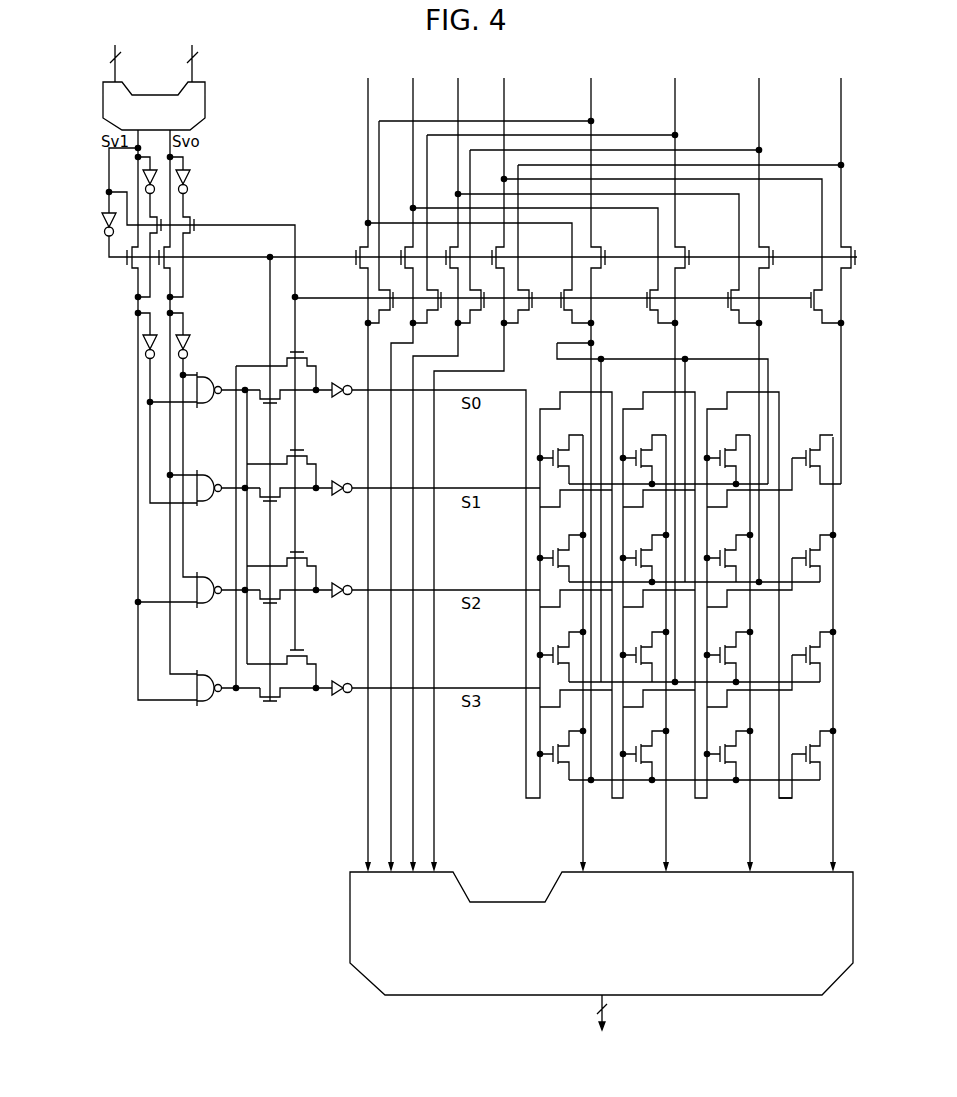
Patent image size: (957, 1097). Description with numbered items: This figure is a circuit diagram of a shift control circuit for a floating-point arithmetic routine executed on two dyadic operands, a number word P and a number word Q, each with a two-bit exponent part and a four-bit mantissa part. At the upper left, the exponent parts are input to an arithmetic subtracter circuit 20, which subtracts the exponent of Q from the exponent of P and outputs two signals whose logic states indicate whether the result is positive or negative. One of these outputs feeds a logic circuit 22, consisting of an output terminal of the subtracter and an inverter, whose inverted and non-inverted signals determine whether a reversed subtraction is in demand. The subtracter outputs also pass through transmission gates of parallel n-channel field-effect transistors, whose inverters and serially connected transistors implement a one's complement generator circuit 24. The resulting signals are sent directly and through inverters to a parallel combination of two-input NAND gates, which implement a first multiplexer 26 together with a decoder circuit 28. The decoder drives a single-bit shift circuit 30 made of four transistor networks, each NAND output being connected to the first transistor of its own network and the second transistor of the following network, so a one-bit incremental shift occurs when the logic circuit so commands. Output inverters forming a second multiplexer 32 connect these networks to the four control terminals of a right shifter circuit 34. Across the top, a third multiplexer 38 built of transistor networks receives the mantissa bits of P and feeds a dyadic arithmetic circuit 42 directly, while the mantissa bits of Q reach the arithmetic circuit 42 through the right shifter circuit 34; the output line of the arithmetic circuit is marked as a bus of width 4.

The arithmetic subtracter circuit 20 is at (205, 101).
The logic circuit 22 is at (109, 242).
The one's complement generator circuit 24 is at (196, 337).
The first multiplexer 26 is at (206, 710).
The decoder circuit 28 is at (228, 639).
The single-bit shift circuit 30 is at (290, 710).
The second multiplexer 32 is at (289, 626).
The right shifter circuit 34 is at (511, 745).
The third multiplexer 38 is at (364, 151).
The dyadic arithmetic circuit 42 is at (496, 898).
The output bus 4 is at (608, 1012).